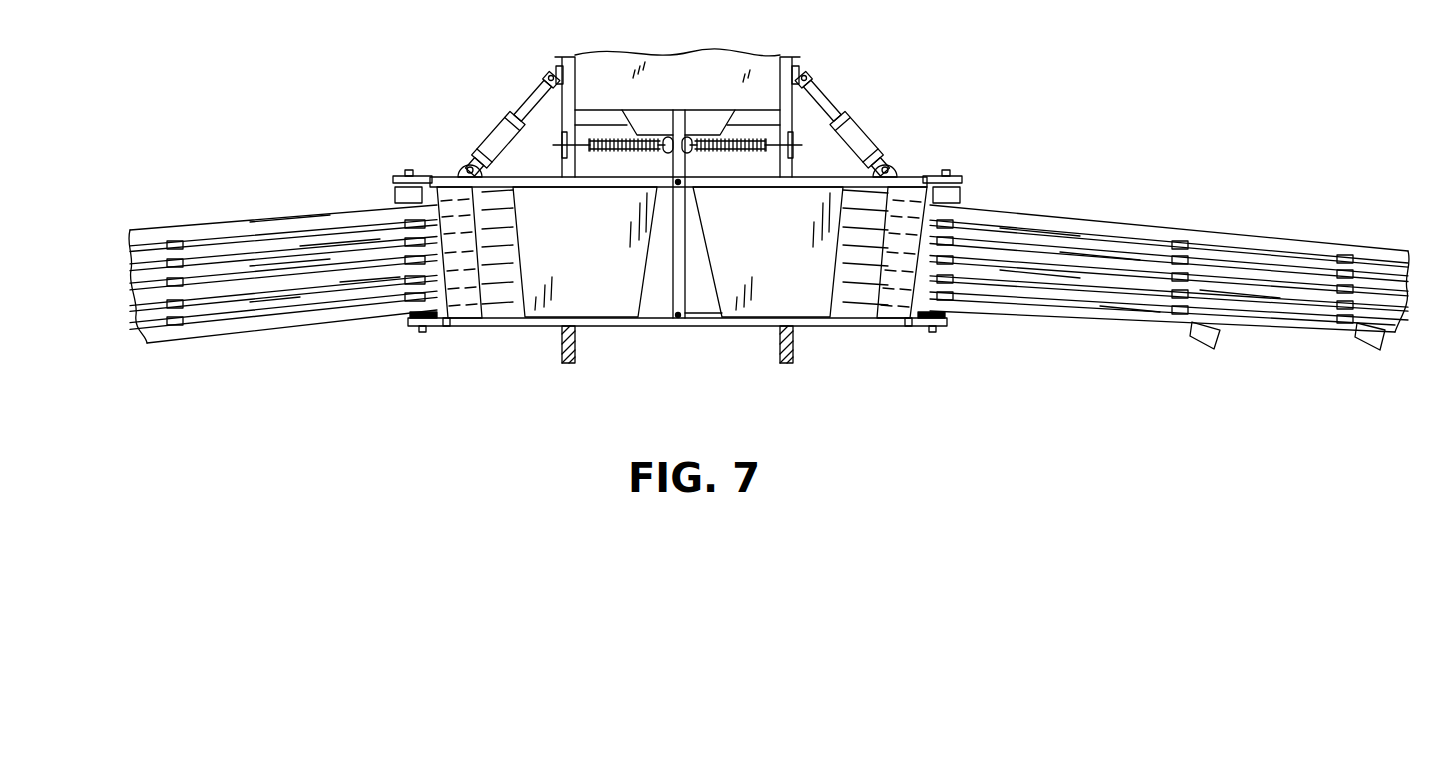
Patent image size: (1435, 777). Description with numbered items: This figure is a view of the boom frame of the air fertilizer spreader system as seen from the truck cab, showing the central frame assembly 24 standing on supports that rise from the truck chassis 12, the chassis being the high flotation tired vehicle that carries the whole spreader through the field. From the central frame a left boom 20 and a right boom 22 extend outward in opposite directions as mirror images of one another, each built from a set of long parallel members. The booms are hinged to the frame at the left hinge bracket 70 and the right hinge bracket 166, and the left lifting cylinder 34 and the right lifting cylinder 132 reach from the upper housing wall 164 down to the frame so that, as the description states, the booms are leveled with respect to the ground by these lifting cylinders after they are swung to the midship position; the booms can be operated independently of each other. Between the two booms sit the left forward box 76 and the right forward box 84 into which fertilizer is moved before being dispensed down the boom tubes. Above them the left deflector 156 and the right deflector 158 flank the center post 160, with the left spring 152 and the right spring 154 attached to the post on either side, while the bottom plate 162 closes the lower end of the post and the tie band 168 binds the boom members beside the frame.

The truck chassis 12 is at (578, 365).
The left wing section 20 is at (277, 208).
The right wing section 22 is at (1118, 212).
The center frame assembly 24 is at (898, 83).
The left hydraulic cylinder 34 is at (503, 138).
The left hinge bracket 70 is at (409, 172).
The left hopper box 76 is at (598, 266).
The right hopper box 84 is at (787, 266).
The right hydraulic cylinder 132 is at (860, 137).
The left spring 152 is at (624, 148).
The right spring 154 is at (733, 147).
The left deflector 156 is at (676, 138).
The right deflector 158 is at (692, 119).
The center post 160 is at (677, 293).
The bottom plate 162 is at (681, 322).
The housing wall 164 is at (611, 117).
The right hinge bracket 166 is at (953, 172).
The tie band 168 is at (472, 312).